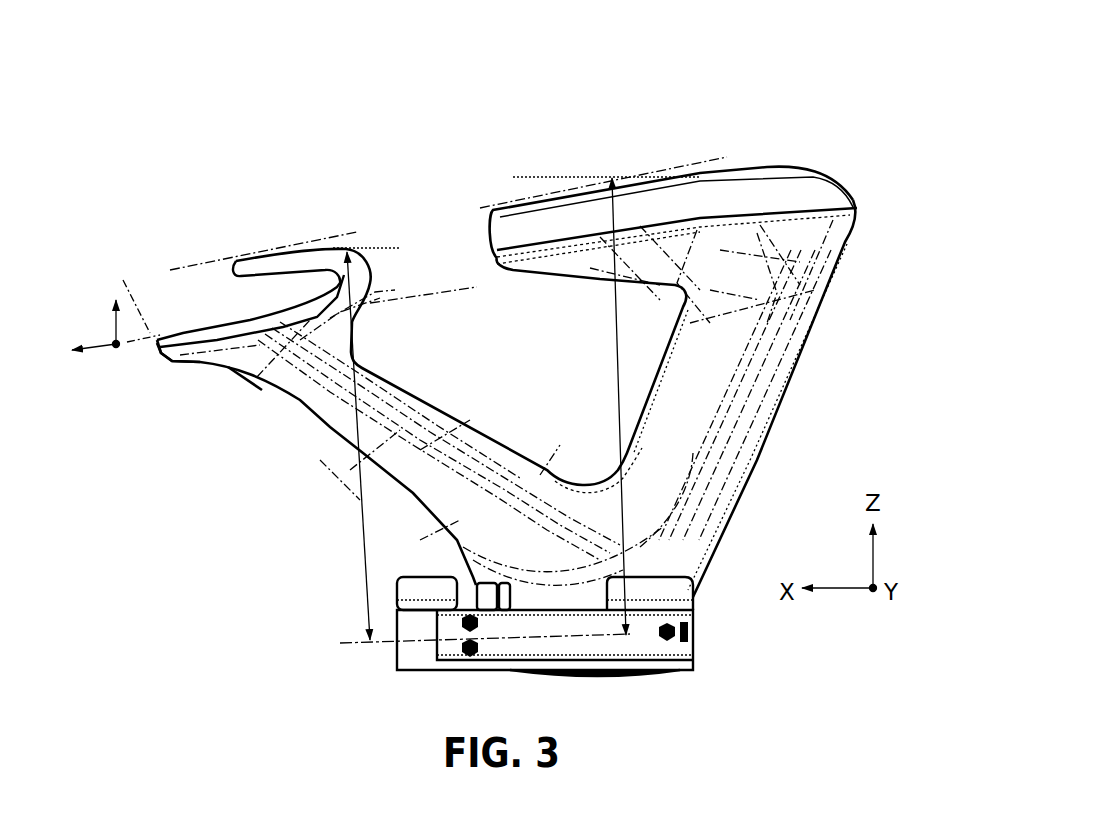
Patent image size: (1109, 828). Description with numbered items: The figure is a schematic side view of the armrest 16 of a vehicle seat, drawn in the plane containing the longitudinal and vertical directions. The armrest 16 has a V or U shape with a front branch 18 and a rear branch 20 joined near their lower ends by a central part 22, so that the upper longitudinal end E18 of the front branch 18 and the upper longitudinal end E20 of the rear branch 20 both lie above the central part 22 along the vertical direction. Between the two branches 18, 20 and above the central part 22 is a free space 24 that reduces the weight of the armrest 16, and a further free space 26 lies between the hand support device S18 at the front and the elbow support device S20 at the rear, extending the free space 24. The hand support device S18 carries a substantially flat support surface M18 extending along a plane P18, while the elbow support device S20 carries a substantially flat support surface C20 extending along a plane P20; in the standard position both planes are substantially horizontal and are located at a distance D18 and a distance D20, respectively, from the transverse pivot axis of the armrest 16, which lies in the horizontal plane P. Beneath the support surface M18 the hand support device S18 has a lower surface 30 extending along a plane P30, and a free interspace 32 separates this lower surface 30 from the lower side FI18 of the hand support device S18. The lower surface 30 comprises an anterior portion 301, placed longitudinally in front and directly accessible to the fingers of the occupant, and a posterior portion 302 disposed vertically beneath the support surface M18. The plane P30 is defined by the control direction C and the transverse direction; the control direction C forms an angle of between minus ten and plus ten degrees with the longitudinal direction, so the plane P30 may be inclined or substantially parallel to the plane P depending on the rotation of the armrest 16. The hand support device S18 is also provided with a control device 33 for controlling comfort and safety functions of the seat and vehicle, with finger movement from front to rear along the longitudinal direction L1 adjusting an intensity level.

The armrest 16 is at (752, 93).
The front branch 18 is at (464, 400).
The rear branch 20 is at (652, 365).
The central part 22 is at (592, 480).
The free space 24 is at (522, 340).
The free space 26 is at (420, 262).
The lower surface 30 is at (180, 348).
The anterior portion 301 is at (203, 344).
The posterior portion 302 is at (255, 343).
The interspace 32 is at (250, 305).
The control device 33 is at (160, 247).
The lower side FI18 is at (240, 297).
The support surface M18 is at (247, 252).
The upper longitudinal end E18 is at (211, 378).
The hand support device S18 is at (316, 232).
The plane P18 is at (372, 240).
The distance D18 is at (360, 504).
The distance D20 is at (613, 300).
The plane P20 is at (522, 176).
The support surface C20 is at (678, 160).
The elbow support device S20 is at (812, 157).
The upper longitudinal end E20 is at (867, 240).
The longitudinal direction L1 is at (460, 288).
The plane P30 is at (122, 293).
The horizontal plane P is at (356, 650).
The control direction C is at (100, 349).